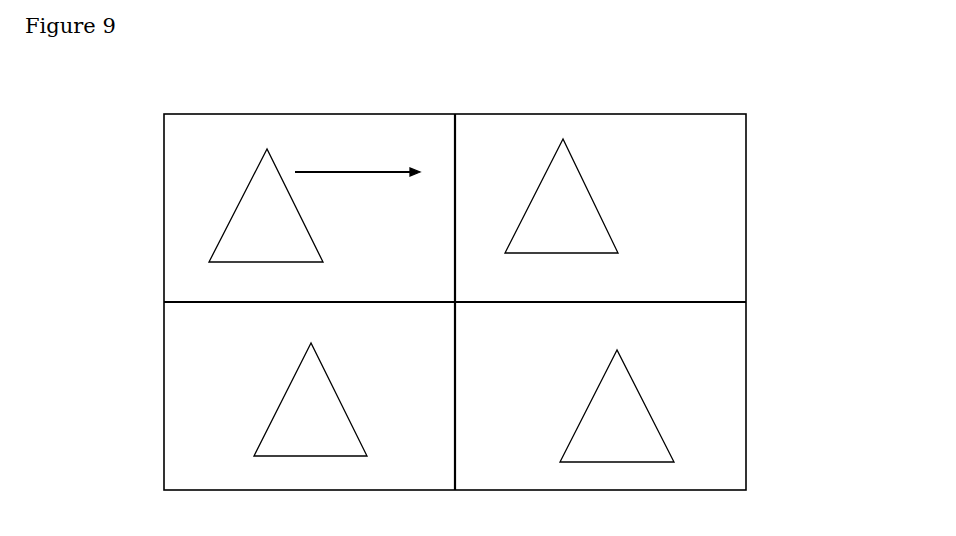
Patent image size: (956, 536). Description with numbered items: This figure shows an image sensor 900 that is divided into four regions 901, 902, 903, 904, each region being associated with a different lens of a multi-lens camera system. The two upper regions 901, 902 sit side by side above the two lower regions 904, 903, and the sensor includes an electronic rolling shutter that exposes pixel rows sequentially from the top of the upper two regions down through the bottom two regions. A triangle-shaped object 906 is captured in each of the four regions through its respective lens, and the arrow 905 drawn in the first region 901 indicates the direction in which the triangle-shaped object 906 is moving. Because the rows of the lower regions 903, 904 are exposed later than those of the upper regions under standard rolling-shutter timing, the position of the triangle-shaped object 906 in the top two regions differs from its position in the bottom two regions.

The image sensor 900 is at (161, 205).
The first image sensor region 901 is at (164, 131).
The second image sensor region 902 is at (732, 145).
The third image sensor region 903 is at (736, 437).
The fourth image sensor region 904 is at (190, 477).
The arrow 905 is at (357, 166).
The triangle-shaped object 906 is at (441, 300).